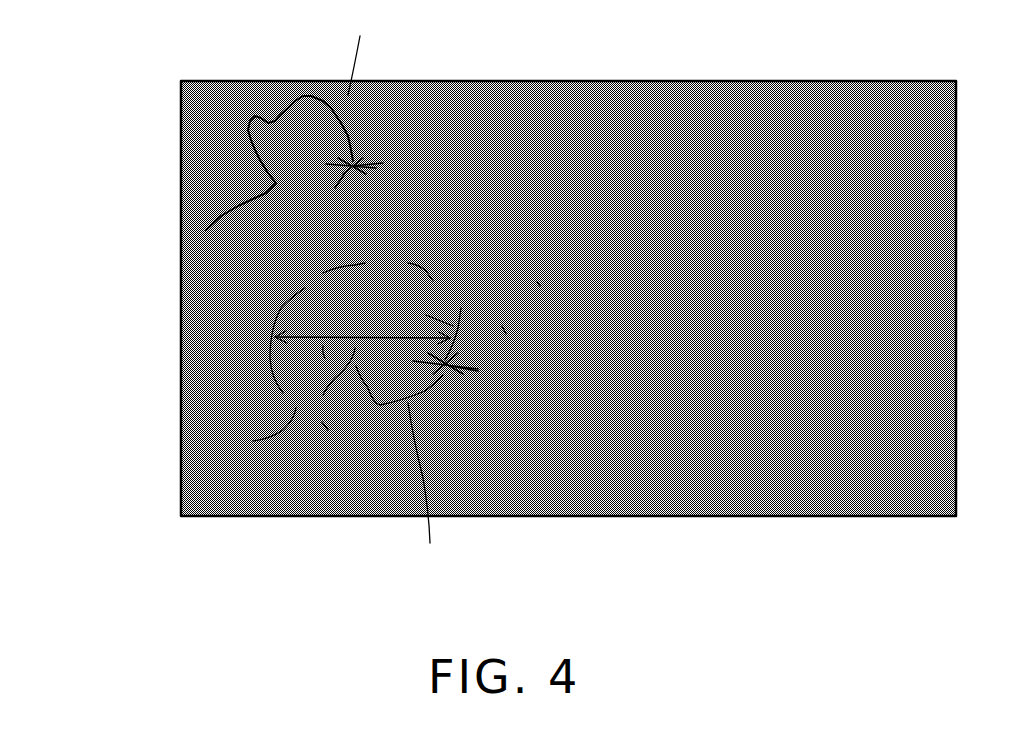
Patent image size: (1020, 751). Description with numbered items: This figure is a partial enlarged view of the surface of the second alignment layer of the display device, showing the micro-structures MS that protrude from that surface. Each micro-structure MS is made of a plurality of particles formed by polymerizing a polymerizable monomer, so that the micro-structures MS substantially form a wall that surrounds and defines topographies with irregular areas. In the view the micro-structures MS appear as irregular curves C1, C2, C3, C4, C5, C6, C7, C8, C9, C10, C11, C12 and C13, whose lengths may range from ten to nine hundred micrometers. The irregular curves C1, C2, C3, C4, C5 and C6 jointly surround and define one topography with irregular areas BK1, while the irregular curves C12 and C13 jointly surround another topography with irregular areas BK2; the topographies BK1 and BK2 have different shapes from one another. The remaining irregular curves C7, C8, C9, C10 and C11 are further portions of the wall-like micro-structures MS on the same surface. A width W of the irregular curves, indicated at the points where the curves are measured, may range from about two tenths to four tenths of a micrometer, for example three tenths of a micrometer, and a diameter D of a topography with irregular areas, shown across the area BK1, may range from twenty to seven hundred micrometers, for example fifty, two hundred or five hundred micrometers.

The topography with irregular areas BK1 is at (322, 288).
The topography with irregular areas BK2 is at (268, 133).
The micro-structure MS is at (398, 292).
The width W is at (345, 158).
The diameter D is at (362, 326).
The irregular curve C1 is at (269, 340).
The irregular curve C2 is at (344, 256).
The irregular curve C3 is at (438, 261).
The irregular curve C4 is at (443, 324).
The irregular curve C5 is at (464, 398).
The irregular curve C6 is at (399, 378).
The irregular curve C7 is at (343, 430).
The irregular curve C8 is at (264, 422).
The irregular curve C9 is at (320, 370).
The irregular curve C10 is at (531, 331).
The irregular curve C11 is at (567, 288).
The irregular curve C12 is at (230, 174).
The irregular curve C13 is at (384, 117).